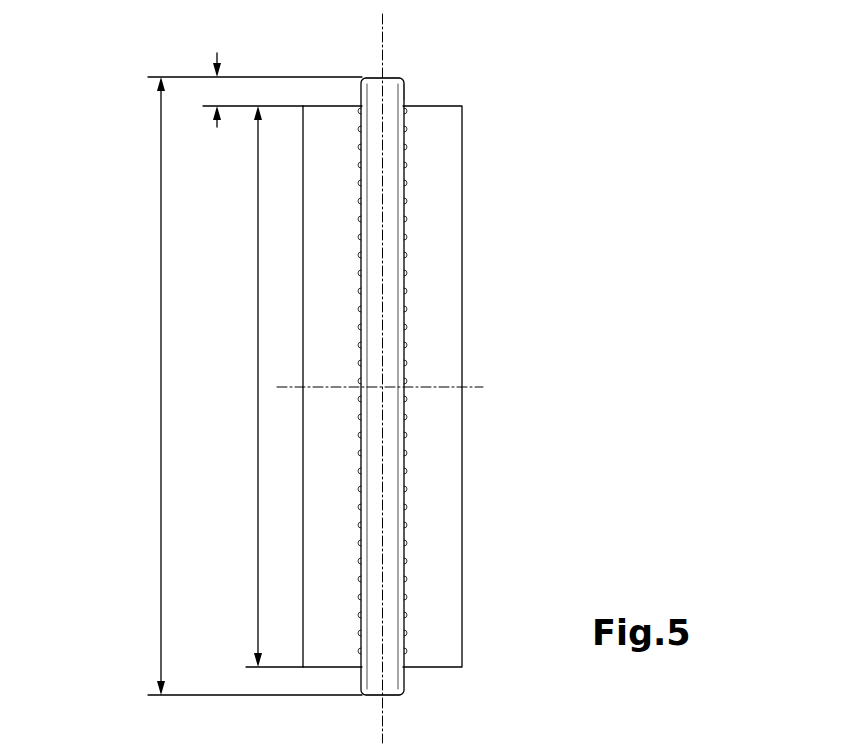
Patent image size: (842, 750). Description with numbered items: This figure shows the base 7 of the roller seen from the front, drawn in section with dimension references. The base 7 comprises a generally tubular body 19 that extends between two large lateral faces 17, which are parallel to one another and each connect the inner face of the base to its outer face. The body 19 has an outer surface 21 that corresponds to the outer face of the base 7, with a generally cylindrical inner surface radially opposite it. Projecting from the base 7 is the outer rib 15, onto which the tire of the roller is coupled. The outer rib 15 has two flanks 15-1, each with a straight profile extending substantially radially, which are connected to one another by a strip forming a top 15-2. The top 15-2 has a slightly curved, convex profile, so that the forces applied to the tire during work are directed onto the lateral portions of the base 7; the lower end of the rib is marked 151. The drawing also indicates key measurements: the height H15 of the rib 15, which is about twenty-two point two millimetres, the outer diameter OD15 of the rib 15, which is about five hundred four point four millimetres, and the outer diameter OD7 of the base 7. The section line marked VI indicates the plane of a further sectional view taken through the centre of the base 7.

The base 7 is at (462, 667).
The outer rib 15 is at (390, 430).
The flanks 15-1 is at (405, 88).
The top 15-2 is at (393, 78).
The rod bottom end 151 is at (361, 680).
The lateral faces 17 is at (465, 257).
The tubular body 19 is at (434, 492).
The outer surface 21 is at (440, 187).
The outer diameter of rib OD15 is at (160, 366).
The outer diameter of body 7 OD7 is at (257, 340).
The height of rib H15 is at (213, 92).
The section line VI is at (384, 29).